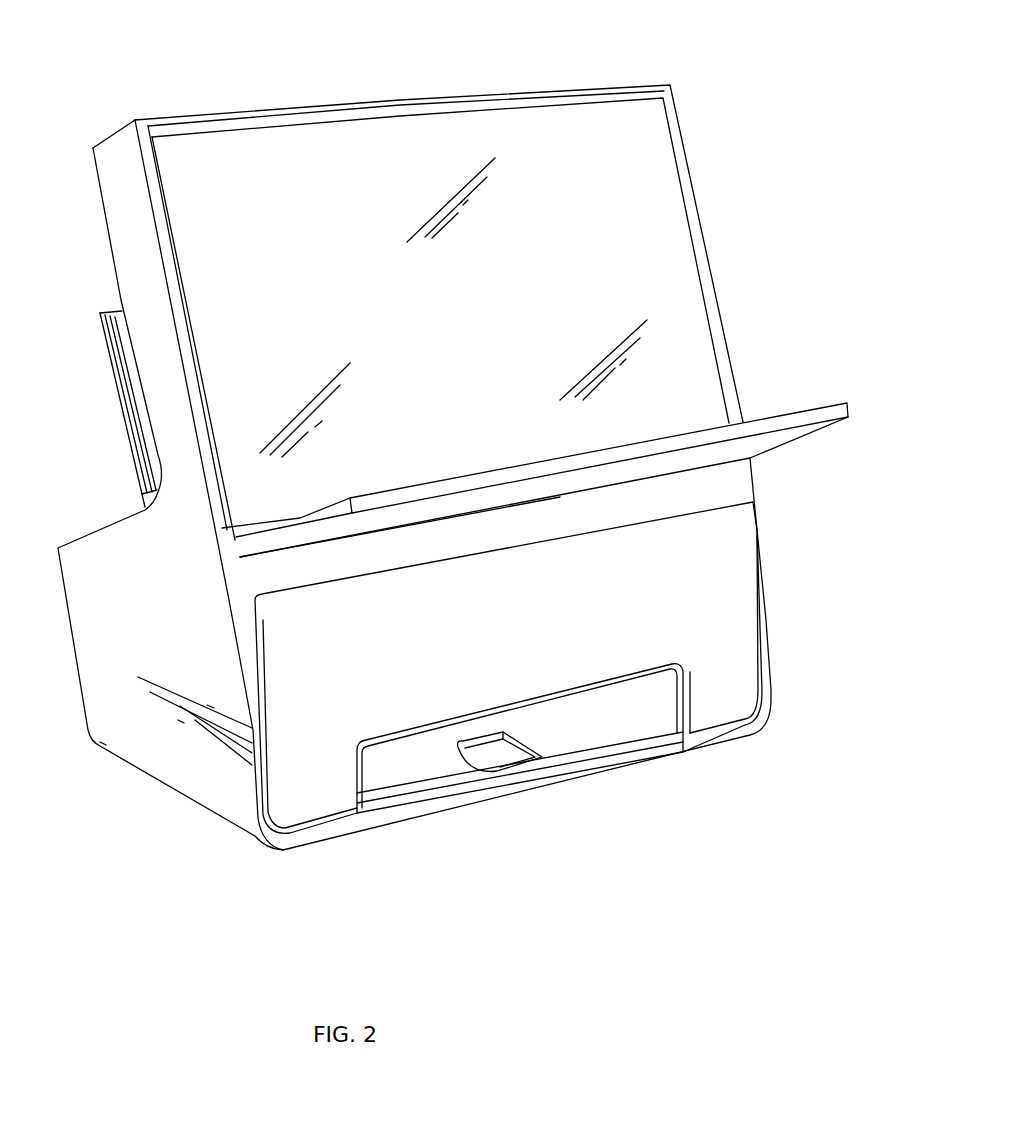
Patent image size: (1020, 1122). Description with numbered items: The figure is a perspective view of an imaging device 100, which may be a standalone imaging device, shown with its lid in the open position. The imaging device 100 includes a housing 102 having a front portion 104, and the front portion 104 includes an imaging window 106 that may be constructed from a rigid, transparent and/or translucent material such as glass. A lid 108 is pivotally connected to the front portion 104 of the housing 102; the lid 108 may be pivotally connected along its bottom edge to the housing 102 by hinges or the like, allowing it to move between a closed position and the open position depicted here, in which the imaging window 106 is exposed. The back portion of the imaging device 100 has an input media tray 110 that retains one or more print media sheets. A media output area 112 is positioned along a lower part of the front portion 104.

The imaging device 100 is at (748, 124).
The housing 102 is at (78, 535).
The front portion 104 is at (737, 570).
The imaging window 106 is at (692, 307).
The lid 108 is at (780, 418).
The input media tray 110 is at (117, 392).
The media output area 112 is at (688, 665).